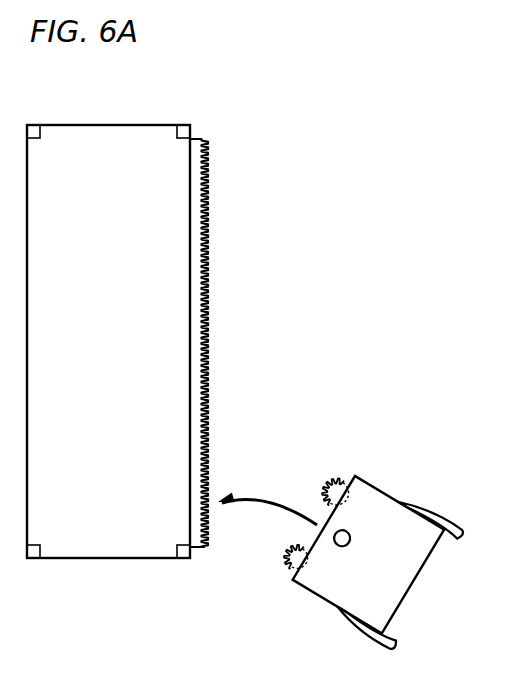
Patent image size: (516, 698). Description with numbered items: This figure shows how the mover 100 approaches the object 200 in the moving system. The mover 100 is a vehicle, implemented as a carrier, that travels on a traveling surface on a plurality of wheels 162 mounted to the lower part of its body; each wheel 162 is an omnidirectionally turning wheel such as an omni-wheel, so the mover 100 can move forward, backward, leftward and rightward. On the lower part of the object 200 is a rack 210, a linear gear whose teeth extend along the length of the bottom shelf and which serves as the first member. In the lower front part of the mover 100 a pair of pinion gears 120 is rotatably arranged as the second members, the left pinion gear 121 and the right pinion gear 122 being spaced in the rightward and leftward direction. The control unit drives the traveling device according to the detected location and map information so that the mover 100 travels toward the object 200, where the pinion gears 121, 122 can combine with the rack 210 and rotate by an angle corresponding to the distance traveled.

The object 200 is at (137, 120).
The rack 210 is at (196, 272).
The mover 100 is at (348, 556).
The pinion gears 120 is at (316, 524).
The pinion gear 121 is at (336, 492).
The pinion gear 122 is at (296, 557).
The wheels 162 is at (398, 572).